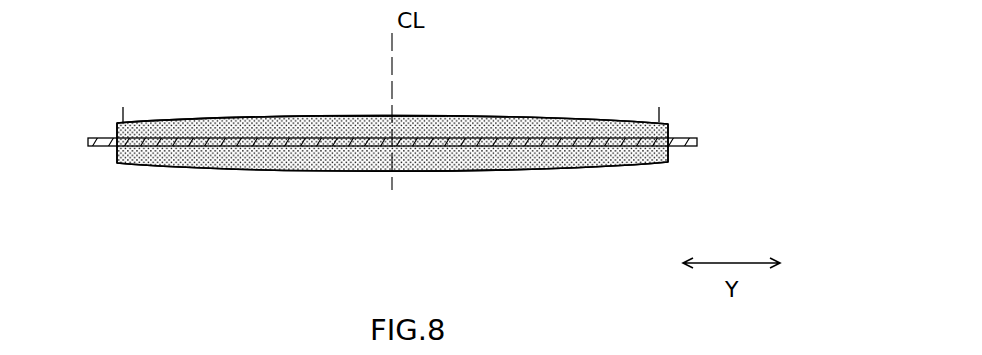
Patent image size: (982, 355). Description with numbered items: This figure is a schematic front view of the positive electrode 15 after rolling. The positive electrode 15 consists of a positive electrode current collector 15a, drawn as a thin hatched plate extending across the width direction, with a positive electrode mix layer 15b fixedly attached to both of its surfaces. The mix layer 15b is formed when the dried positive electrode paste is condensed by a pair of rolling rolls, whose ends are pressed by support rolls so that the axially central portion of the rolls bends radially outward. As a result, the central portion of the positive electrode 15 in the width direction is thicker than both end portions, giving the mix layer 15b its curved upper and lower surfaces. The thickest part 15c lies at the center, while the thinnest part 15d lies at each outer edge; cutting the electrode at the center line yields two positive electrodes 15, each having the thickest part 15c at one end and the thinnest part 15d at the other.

The positive electrode 15 is at (230, 117).
The positive electrode current collector 15a is at (697, 142).
The positive electrode mix layer 15b is at (598, 117).
The thickest part 15c is at (355, 113).
The thinnest part 15d is at (117, 122).